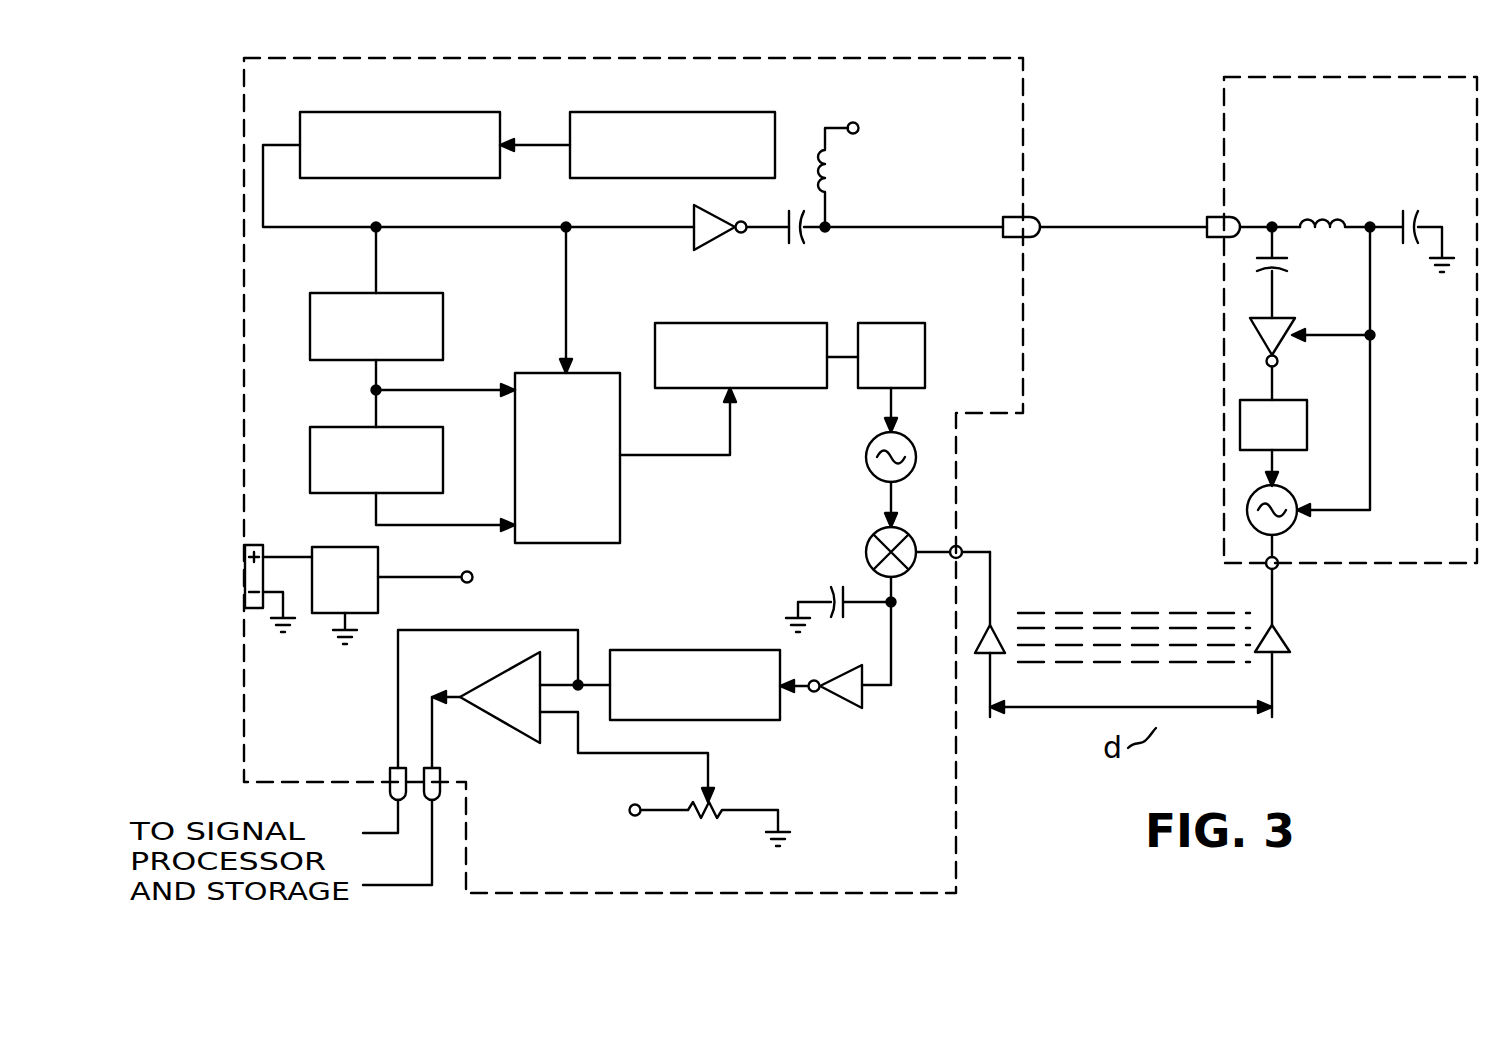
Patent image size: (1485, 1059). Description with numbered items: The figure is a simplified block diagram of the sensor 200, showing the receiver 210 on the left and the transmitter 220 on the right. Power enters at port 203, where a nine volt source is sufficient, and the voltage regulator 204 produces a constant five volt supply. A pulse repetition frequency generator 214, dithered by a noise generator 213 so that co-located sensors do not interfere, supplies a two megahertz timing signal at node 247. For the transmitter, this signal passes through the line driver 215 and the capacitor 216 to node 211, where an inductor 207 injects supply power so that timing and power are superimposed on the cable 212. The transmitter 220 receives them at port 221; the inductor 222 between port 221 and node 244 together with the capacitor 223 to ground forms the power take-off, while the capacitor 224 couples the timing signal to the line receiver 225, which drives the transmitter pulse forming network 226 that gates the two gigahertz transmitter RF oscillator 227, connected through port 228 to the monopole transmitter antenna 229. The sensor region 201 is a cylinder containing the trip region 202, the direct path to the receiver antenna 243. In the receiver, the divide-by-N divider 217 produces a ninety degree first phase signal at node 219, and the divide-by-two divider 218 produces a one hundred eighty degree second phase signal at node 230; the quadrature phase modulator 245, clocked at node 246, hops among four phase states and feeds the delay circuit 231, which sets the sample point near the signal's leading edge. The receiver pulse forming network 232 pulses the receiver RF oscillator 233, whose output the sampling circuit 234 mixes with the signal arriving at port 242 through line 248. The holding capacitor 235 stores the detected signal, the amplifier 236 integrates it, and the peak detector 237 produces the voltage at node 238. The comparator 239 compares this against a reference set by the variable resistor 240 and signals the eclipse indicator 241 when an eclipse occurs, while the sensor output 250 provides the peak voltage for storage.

The sensor 200 is at (1116, 156).
The sensor region 201 is at (1105, 613).
The trip region 202 is at (1144, 635).
The port 203 is at (248, 612).
The voltage regulator 204 is at (385, 562).
The power injection inductor 207 is at (831, 190).
The receiver 210 is at (1023, 110).
The node 211 is at (840, 231).
The cable 212 is at (1122, 237).
The noise generator 213 is at (673, 178).
The pulse repetition frequency generator 214 is at (420, 178).
The line driver 215 is at (694, 235).
The capacitor 216 is at (800, 246).
The Divide-by-N frequency divider 217 is at (310, 332).
The Divide-by-2 frequency divider 218 is at (310, 460).
The node 219 is at (372, 390).
The transmitter 220 is at (1224, 160).
The port 221 is at (1221, 238).
The inductor 222 is at (1320, 222).
The capacitor 223 is at (1400, 217).
The capacitor 224 is at (1280, 266).
The line receiver 225 is at (1255, 330).
The transmitter pulse forming network 226 is at (1240, 425).
The transmitter RF oscillator 227 is at (1298, 519).
The port 228 is at (1280, 567).
The transmitter antenna 229 is at (1290, 645).
The node 230 is at (372, 523).
The delay circuit 231 is at (776, 392).
The receiver pulse forming network 232 is at (928, 346).
The receiver RF oscillator 233 is at (866, 468).
The sampling circuit 234 is at (870, 540).
The holding capacitor 235 is at (830, 596).
The amplifier 236 is at (846, 710).
The peak detector 237 is at (668, 650).
The node 238 is at (580, 682).
The comparator 239 is at (500, 680).
The variable resistor 240 is at (708, 814).
The eclipse indicator 241 is at (445, 778).
The port 242 is at (962, 548).
The receiver antenna 243 is at (1000, 628).
The node 244 is at (1376, 237).
The quadrature phase modulator 245 is at (622, 515).
The node 246 is at (560, 371).
The node 247 is at (370, 235).
The signal line 248 is at (896, 610).
The sensor output 250 is at (392, 773).